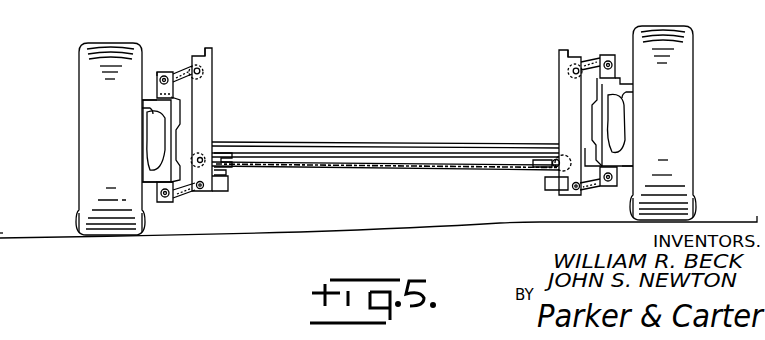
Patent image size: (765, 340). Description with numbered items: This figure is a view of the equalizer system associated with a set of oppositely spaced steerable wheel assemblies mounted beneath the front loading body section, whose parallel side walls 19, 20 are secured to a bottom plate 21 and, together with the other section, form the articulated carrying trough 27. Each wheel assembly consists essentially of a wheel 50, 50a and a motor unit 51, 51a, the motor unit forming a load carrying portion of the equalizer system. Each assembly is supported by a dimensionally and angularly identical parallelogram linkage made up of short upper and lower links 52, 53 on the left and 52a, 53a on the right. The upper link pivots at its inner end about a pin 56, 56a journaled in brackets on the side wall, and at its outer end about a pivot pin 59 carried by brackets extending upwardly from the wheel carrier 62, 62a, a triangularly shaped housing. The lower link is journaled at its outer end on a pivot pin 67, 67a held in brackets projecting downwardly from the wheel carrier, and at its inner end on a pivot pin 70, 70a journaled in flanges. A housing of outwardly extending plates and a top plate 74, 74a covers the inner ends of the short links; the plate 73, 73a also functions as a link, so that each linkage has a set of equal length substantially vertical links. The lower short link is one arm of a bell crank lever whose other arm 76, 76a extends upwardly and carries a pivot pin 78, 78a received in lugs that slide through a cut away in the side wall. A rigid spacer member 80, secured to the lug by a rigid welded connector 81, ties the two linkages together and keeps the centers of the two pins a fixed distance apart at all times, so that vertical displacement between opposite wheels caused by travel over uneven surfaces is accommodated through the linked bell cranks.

The side wall 19 is at (212, 97).
The side wall 20 is at (560, 112).
The bottom plate 21 is at (450, 128).
The carrying trough 27 is at (405, 90).
The wheel 50 is at (95, 39).
The wheel 50a is at (700, 73).
The motor unit 51 is at (149, 77).
The motor unit 51a is at (625, 71).
The upper link 52 is at (182, 67).
The upper link 52a is at (594, 54).
The lower link 53 is at (195, 194).
The lower link 53a is at (589, 195).
The pin 56 is at (212, 65).
The pin 56a is at (563, 68).
The pivot pin 59 is at (171, 70).
The wheel carrier 62 is at (150, 190).
The wheel carrier 62a is at (620, 127).
The pivot pin 67 is at (166, 204).
The pivot pin 67a is at (608, 188).
The pivot pin 70 is at (224, 191).
The pivot pin 70a is at (565, 191).
The plate 73 is at (203, 92).
The plate 73a is at (563, 90).
The top plate 74 is at (207, 48).
The top plate 74a is at (568, 50).
The arm 76 is at (228, 174).
The arm 76a is at (548, 196).
The pivot pin 78 is at (210, 129).
The pivot pin 78a is at (543, 176).
The spacer member 80 is at (405, 166).
The welded connector 81 is at (228, 158).